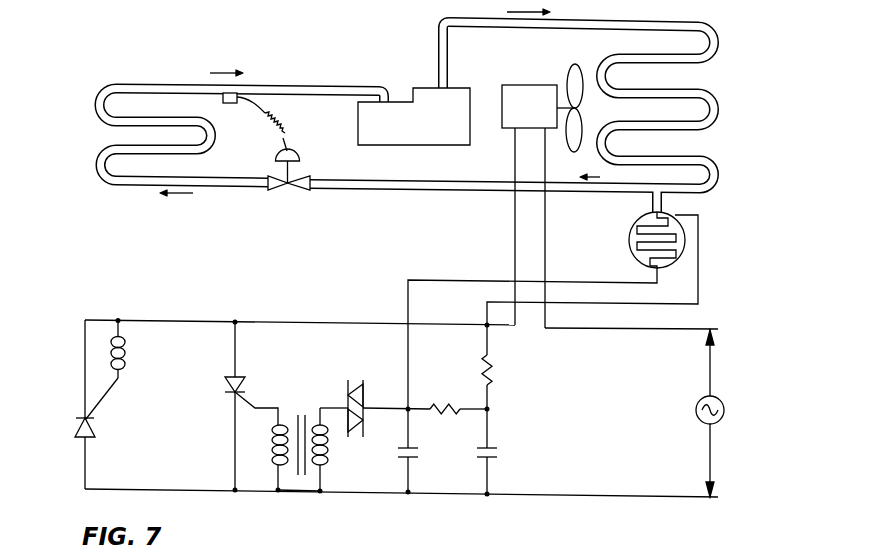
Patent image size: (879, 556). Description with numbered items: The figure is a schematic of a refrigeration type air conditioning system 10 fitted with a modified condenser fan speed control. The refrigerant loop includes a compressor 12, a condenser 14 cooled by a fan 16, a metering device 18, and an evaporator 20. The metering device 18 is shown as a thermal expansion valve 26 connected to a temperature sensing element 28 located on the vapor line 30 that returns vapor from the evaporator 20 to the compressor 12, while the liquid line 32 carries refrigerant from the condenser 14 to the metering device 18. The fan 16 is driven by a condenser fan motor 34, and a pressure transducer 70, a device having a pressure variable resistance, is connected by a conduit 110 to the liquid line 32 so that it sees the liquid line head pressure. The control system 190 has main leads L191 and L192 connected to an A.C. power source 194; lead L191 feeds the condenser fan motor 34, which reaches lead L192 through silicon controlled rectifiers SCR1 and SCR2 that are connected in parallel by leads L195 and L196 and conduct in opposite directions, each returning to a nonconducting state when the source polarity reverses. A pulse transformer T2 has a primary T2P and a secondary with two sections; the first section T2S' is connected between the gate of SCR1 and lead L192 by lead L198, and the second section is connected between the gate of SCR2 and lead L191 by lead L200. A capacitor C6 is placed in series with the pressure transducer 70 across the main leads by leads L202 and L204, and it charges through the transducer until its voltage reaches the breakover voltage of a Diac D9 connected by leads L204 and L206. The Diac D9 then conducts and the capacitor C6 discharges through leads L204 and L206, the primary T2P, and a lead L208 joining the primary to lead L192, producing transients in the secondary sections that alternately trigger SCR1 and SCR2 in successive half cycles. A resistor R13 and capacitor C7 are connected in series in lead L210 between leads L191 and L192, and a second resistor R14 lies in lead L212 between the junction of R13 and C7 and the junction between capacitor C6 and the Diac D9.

The refrigeration type air conditioning system 10 is at (391, 50).
The compressor 12 is at (442, 131).
The condenser 14 is at (719, 113).
The fan 16 is at (549, 62).
The metering device 18 is at (292, 189).
The evaporator 20 is at (96, 101).
The thermal expansion valve 26 is at (284, 173).
The temperature sensing element 28 is at (233, 103).
The vapor line 30 is at (298, 85).
The liquid line 32 is at (688, 197).
The condenser fan motor 34 is at (541, 115).
The pressure transducer 70 is at (629, 240).
The conduit 110 is at (652, 200).
The control system 190 is at (216, 294).
The A.C. power source 194 is at (724, 402).
The main lead L191 is at (352, 321).
The main lead L192 is at (165, 490).
The lead L195 is at (235, 355).
The lead L196 is at (85, 370).
The lead L198 is at (255, 408).
The lead L200 is at (112, 402).
The lead L202 is at (698, 272).
The lead L204 is at (455, 279).
The lead L206 is at (335, 407).
The lead L208 is at (318, 478).
The lead L210 is at (489, 428).
The lead L212 is at (416, 410).
The pulse transformer T2 is at (299, 417).
The first secondary section T2S' is at (262, 457).
The pulse transformer primary T2P is at (328, 447).
The silicon controlled rectifier SCR1 is at (240, 378).
The silicon controlled rectifier SCR2 is at (96, 432).
The Diac D9 is at (363, 380).
The resistor R13 is at (493, 373).
The second resistor R14 is at (449, 402).
The capacitor C6 is at (416, 458).
The capacitor C7 is at (496, 453).